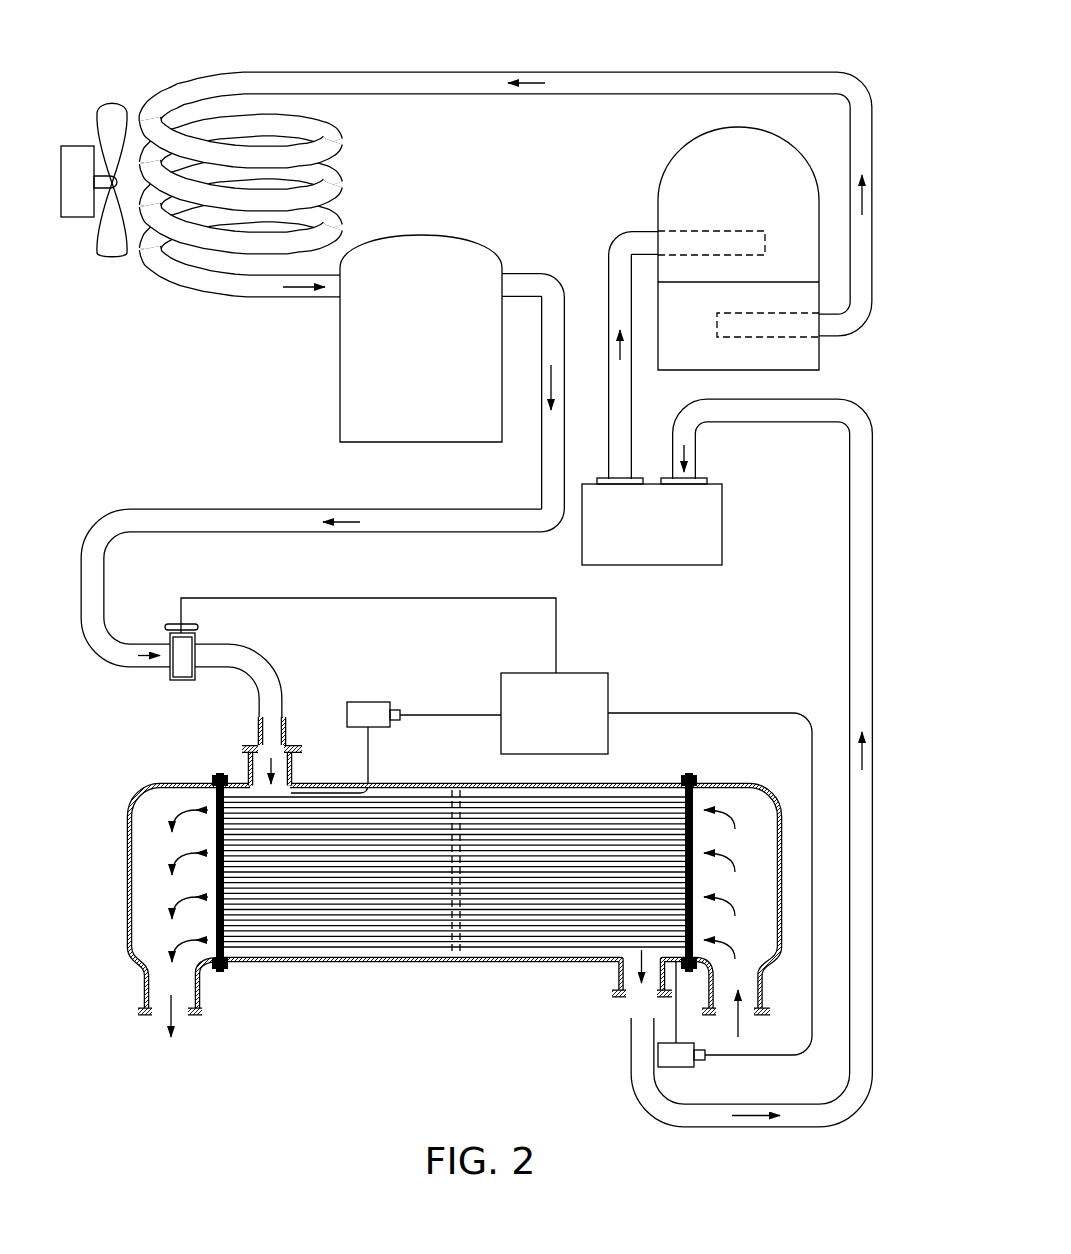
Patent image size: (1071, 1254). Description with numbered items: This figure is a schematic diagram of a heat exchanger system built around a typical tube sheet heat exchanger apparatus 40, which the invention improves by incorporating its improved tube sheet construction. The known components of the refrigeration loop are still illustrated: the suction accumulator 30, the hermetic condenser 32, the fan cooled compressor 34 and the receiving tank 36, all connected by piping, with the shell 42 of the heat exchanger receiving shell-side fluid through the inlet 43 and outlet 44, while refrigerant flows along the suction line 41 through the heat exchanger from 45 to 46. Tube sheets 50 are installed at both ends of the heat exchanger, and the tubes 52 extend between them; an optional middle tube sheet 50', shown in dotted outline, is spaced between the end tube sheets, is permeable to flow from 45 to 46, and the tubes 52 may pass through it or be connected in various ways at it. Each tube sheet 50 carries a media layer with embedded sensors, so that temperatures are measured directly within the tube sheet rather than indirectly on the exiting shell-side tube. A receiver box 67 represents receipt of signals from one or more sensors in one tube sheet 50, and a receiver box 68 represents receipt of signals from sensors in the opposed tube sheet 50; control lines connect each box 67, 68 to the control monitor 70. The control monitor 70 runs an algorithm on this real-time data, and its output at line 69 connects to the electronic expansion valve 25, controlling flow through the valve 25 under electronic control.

The electronic expansion valve 25 is at (178, 687).
The suction accumulator 30 is at (719, 516).
The hermetic condenser 32 is at (674, 184).
The fan cooled compressor 34 is at (243, 49).
The receiving tank 36 is at (354, 353).
The tube sheet heat exchanger apparatus 40 is at (452, 869).
The suction line 41 is at (879, 940).
The shell 42 is at (320, 962).
The fluid inlet 43 is at (762, 987).
The fluid outlet 44 is at (156, 990).
The inlet 45 is at (288, 745).
The outlet 46 is at (632, 985).
The tube sheet 50 is at (454, 872).
The middle tube sheet 50' is at (432, 849).
The tubes 52 is at (481, 923).
The receiver box 67 is at (368, 702).
The receiver box 68 is at (684, 1066).
The output line 69 is at (393, 598).
The control monitor 70 is at (578, 673).